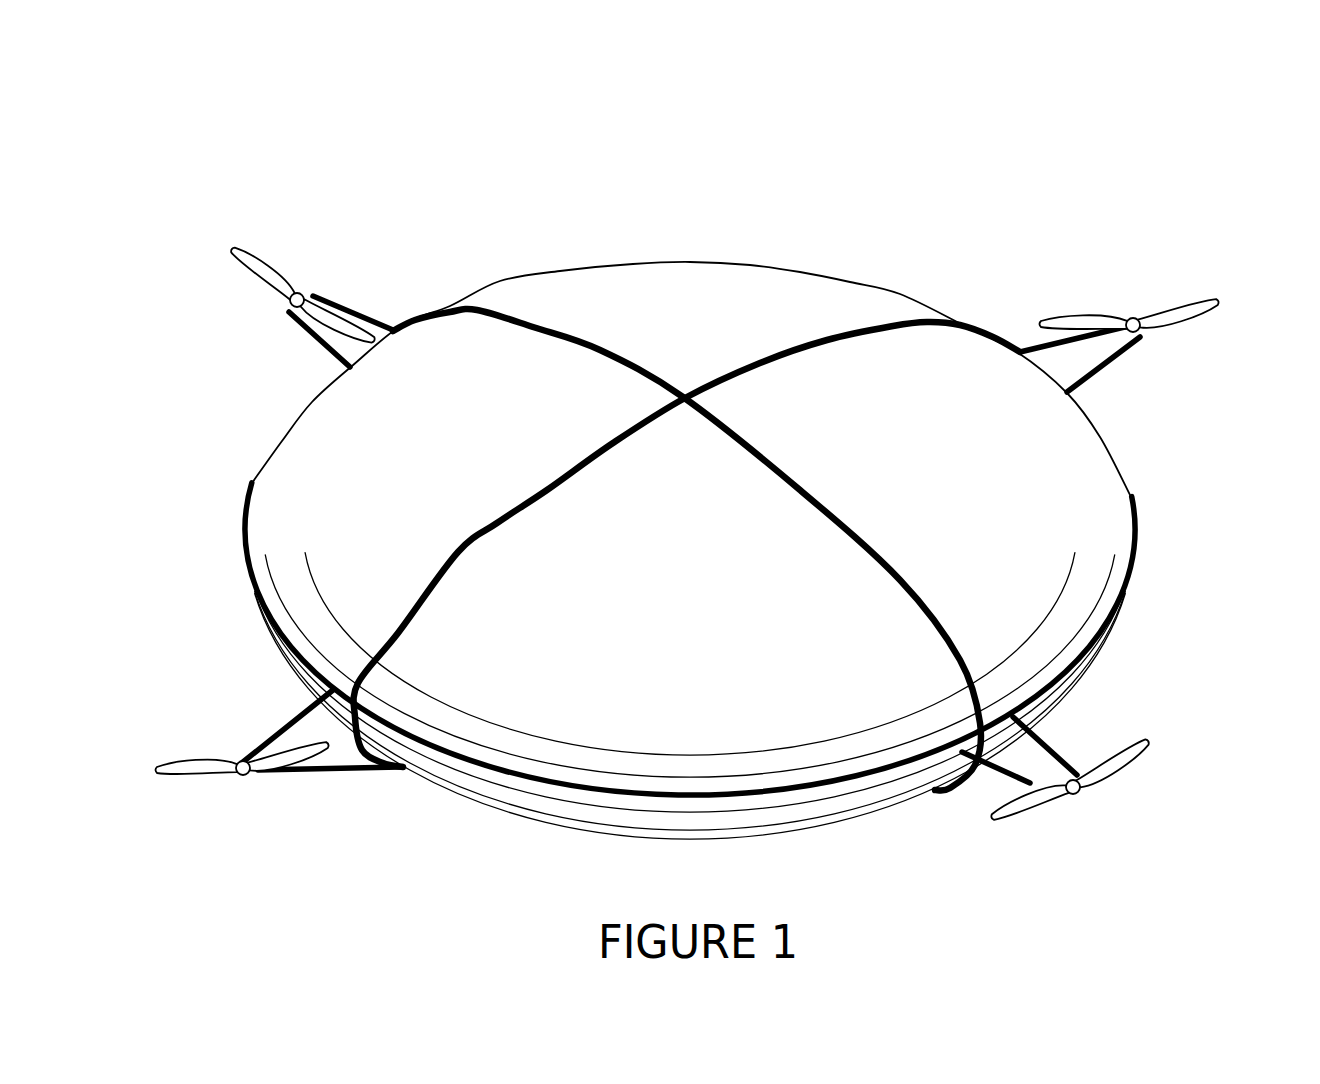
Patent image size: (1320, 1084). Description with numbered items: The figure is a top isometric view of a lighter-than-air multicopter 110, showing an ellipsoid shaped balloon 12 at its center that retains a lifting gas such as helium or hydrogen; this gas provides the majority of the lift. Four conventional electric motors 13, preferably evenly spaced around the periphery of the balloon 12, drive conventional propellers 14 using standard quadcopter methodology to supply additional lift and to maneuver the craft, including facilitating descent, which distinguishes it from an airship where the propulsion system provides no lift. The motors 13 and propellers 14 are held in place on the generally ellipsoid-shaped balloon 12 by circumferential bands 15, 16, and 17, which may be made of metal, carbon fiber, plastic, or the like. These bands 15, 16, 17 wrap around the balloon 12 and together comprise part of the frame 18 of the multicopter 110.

The multicopter 110 is at (1035, 160).
The ellipsoid shaped volume (balloon) 12 is at (1084, 452).
The electric motors 13 is at (277, 309).
The propellers 14 is at (237, 250).
The band 15 is at (750, 452).
The band 16 is at (497, 535).
The band 17 is at (243, 567).
The frame 18 is at (500, 287).